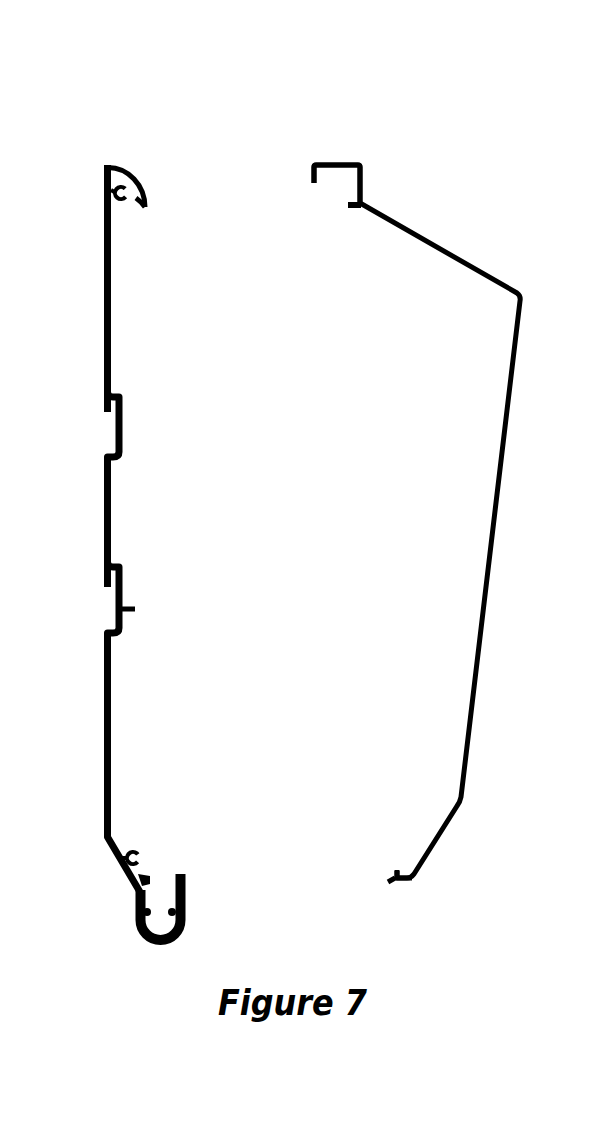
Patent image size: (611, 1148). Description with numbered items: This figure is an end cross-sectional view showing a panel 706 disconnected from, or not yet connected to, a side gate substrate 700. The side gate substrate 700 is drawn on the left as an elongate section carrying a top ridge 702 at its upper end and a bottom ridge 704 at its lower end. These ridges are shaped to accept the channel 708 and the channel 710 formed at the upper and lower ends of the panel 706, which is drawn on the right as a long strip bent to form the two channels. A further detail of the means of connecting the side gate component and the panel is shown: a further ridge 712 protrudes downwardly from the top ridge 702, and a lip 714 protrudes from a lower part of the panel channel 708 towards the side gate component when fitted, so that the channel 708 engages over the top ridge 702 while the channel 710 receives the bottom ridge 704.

The side gate substrate 700 is at (104, 224).
The top ridge 702 is at (107, 164).
The further ridge 712 is at (146, 208).
The bottom ridge 704 is at (182, 872).
The panel 706 is at (495, 550).
The channel 708 is at (340, 177).
The lip 714 is at (349, 206).
The channel 710 is at (392, 882).